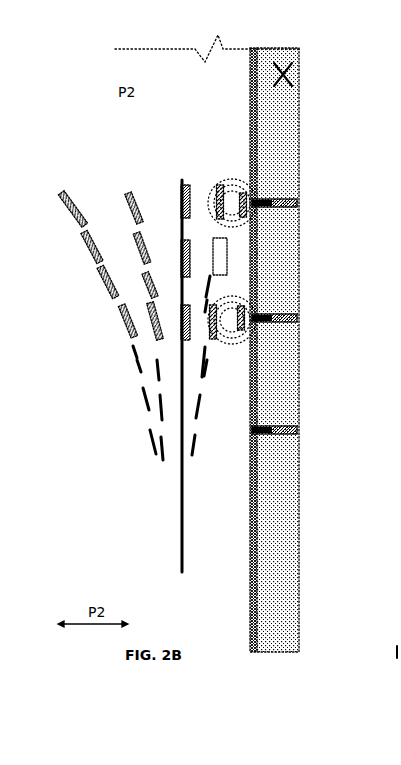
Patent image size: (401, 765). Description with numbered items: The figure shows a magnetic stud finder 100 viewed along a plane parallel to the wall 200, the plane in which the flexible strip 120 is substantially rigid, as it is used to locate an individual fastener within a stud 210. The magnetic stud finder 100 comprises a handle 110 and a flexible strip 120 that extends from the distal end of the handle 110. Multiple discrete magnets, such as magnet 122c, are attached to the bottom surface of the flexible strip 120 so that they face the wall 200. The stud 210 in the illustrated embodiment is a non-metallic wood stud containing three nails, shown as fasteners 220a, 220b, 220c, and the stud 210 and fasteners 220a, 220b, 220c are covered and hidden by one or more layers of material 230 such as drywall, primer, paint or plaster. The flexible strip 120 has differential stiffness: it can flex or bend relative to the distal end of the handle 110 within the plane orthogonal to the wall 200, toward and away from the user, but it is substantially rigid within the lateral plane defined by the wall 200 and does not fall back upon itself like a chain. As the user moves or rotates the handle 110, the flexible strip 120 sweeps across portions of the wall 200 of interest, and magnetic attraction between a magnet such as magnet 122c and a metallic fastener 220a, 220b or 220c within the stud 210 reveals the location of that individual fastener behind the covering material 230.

The magnetic stud finder 100 is at (157, 357).
The handle 110 is at (176, 524).
The flexible strip 120 is at (176, 232).
The magnet 122c is at (184, 185).
The wall 200 is at (321, 350).
The stud 210 is at (275, 527).
The fastener 220a is at (263, 203).
The fastener 220b is at (263, 318).
The fastener 220c is at (263, 430).
The material layer 230 is at (250, 612).